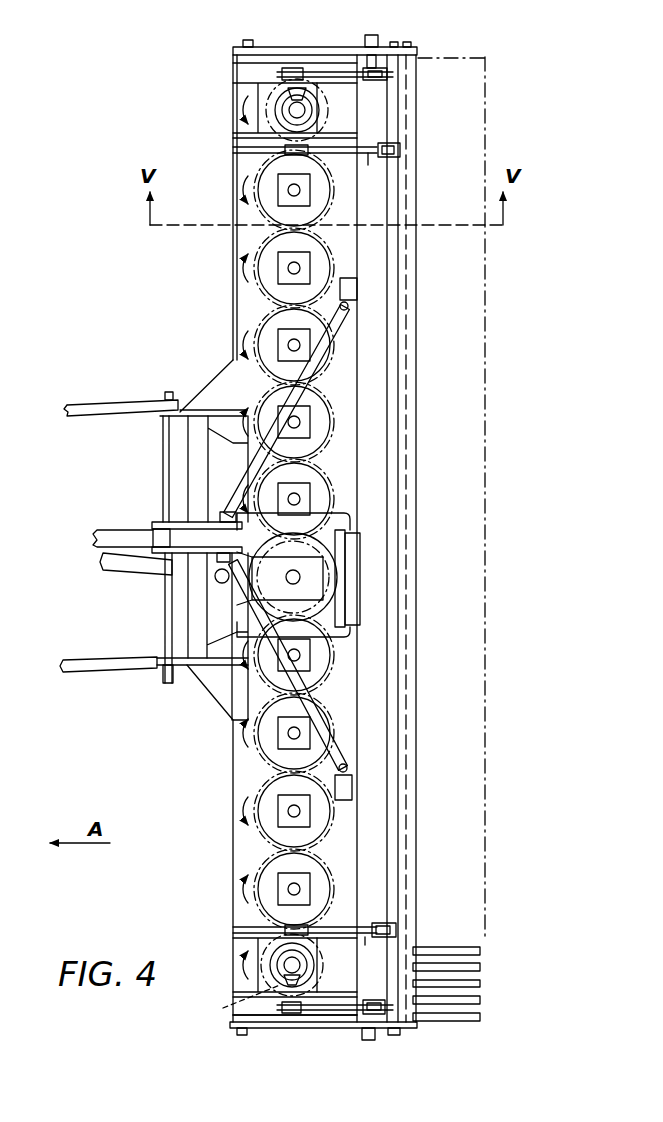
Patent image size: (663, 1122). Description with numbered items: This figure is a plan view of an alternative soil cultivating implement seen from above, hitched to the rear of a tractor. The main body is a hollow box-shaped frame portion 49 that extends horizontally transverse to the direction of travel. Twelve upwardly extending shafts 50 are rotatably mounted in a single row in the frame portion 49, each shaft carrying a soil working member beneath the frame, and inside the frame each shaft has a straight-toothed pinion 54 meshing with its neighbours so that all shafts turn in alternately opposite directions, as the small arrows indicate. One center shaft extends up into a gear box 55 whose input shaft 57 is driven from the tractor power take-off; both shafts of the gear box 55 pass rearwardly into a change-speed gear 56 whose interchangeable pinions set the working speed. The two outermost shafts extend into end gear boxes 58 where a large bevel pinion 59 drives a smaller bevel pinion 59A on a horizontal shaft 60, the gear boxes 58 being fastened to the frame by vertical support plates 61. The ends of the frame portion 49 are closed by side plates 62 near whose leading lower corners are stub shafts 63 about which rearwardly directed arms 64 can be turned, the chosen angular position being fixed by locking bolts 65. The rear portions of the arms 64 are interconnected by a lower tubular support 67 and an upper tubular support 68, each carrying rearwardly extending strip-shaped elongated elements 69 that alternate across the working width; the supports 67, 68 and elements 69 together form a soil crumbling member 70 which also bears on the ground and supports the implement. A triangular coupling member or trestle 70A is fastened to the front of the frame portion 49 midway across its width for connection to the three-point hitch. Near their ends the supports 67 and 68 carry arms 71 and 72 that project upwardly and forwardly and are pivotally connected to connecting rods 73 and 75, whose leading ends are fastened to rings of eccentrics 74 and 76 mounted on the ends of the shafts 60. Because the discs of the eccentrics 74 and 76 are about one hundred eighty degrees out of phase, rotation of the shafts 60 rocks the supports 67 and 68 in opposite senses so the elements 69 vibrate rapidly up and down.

The hollow box-shaped frame portion 49 is at (233, 228).
The shafts 50 is at (312, 255).
The pinions 54 is at (318, 480).
The gear box 55 is at (314, 670).
The change-speed gear 56 is at (360, 602).
The substantially horizontal shaft 57 is at (252, 566).
The gear boxes 58 is at (285, 98).
The large bevel pinion 59 is at (345, 982).
The smaller bevel pinion 59A is at (232, 1010).
The substantially horizontal shaft 60 is at (320, 100).
The support plates 61 is at (245, 88).
The side plates 62 is at (233, 63).
The stub shafts 63 is at (243, 40).
The arms 64 is at (262, 47).
The locking bolts 65 is at (372, 38).
The lower tubular support 67 is at (395, 188).
The upper tubular support 68 is at (416, 137).
The strip-shaped elongated elements 69 is at (490, 953).
The soil crumbling member 70 is at (487, 871).
The coupling member or trestle 70A is at (195, 440).
The arm 71 is at (395, 74).
The arm 72 is at (400, 150).
The connecting rod 73 is at (325, 72).
The eccentric 74 is at (283, 150).
The connecting rod 75 is at (368, 160).
The eccentric 76 is at (292, 68).